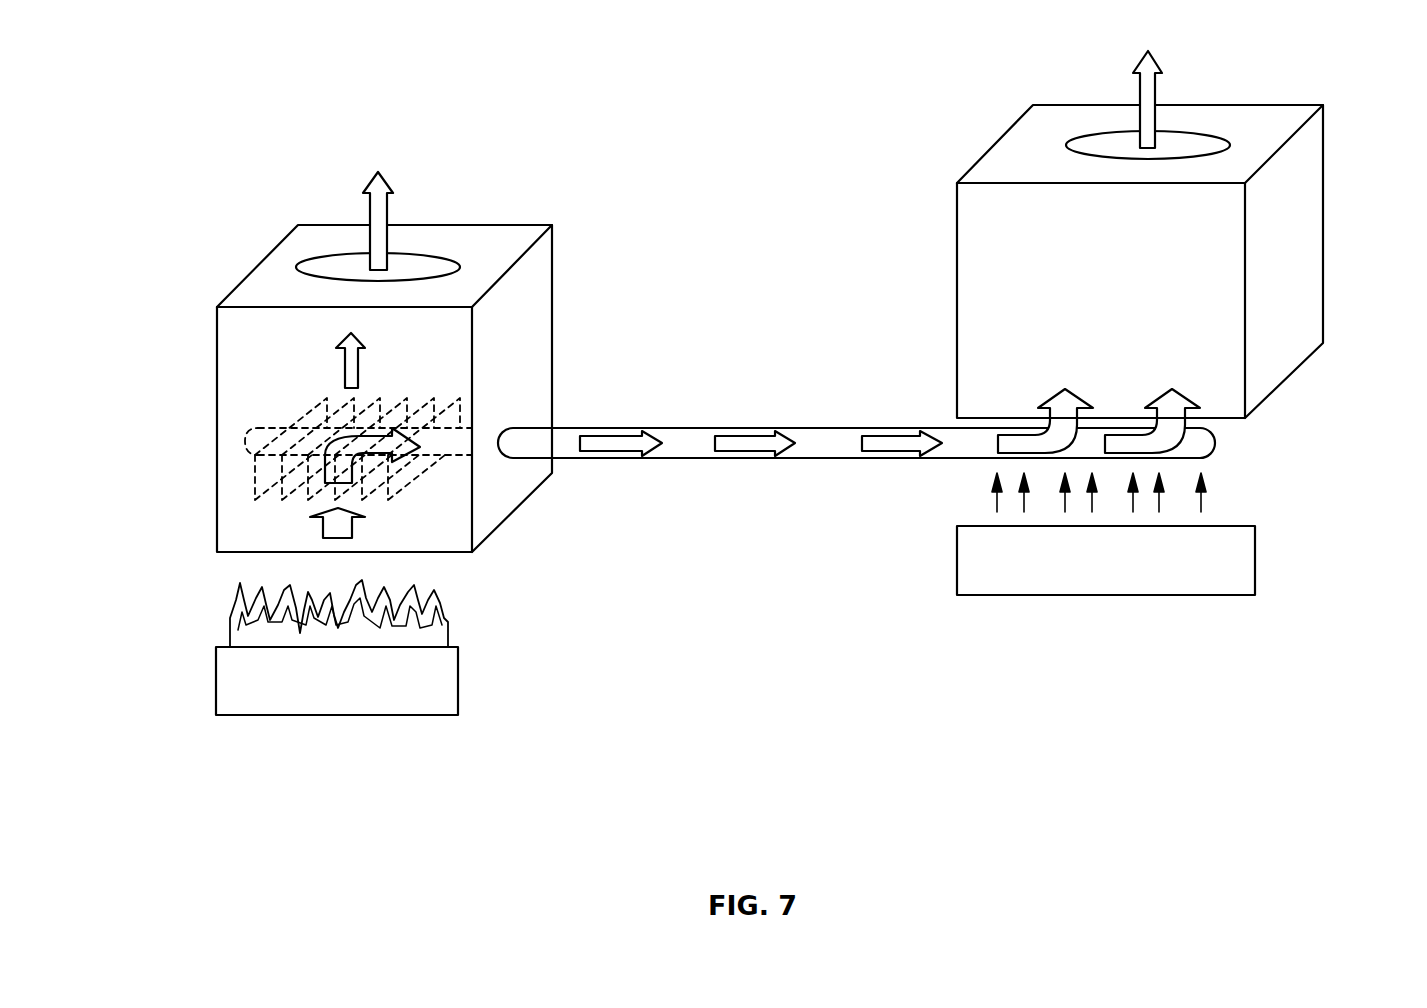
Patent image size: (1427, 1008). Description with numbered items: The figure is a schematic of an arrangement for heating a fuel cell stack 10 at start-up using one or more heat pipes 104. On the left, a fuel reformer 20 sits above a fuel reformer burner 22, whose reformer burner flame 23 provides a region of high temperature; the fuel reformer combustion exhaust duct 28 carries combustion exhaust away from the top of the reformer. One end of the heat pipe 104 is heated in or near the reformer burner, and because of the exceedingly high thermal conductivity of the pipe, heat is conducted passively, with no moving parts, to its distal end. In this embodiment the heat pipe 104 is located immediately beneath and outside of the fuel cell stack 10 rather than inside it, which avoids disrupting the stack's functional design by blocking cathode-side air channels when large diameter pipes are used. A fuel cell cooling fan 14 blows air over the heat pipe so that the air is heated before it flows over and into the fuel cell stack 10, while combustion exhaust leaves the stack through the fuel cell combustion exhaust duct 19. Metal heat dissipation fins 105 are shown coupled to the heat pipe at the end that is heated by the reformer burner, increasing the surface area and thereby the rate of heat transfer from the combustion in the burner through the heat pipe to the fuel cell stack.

The fuel cell stack 10 is at (1323, 147).
The fuel cell cooling fan 14 is at (1255, 570).
The fuel cell combustion exhaust duct 19 is at (1157, 92).
The fuel reformer 20 is at (553, 267).
The fuel reformer burner 22 is at (458, 688).
The reformer burner flame 23 is at (228, 620).
The fuel reformer combustion exhaust duct 28 is at (388, 211).
The heat pipe 104 is at (713, 428).
The metal heat dissipation fins 105 is at (255, 468).